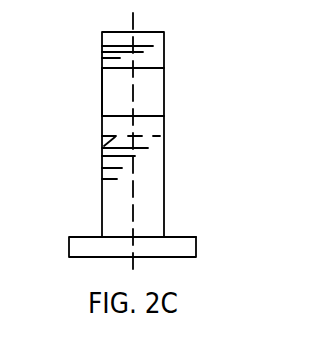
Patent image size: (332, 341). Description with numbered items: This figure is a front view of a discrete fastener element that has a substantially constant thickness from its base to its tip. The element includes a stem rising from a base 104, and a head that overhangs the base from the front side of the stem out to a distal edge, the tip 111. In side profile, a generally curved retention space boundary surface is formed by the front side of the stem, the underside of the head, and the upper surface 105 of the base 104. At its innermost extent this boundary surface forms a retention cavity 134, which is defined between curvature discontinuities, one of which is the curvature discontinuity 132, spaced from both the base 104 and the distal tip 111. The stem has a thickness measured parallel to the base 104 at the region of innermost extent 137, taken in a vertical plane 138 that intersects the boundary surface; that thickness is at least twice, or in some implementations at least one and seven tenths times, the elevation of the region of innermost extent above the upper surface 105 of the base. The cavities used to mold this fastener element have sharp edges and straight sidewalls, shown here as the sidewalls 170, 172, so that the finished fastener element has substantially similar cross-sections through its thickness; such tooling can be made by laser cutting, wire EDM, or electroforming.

The base 104 is at (185, 248).
The upper surface 105 is at (196, 237).
The tip 111 is at (157, 49).
The curvature discontinuity 132 is at (158, 113).
The retention cavity 134 is at (102, 147).
The region of innermost extent 137 is at (157, 136).
The vertical plane 138 is at (133, 13).
The sidewall 170 is at (164, 197).
The sidewall 172 is at (102, 108).